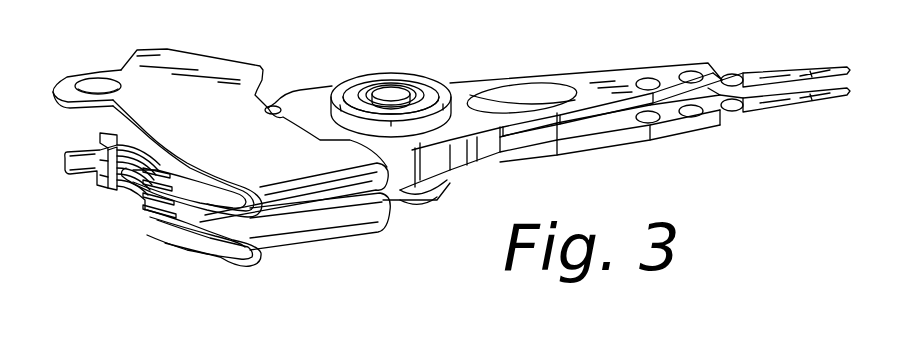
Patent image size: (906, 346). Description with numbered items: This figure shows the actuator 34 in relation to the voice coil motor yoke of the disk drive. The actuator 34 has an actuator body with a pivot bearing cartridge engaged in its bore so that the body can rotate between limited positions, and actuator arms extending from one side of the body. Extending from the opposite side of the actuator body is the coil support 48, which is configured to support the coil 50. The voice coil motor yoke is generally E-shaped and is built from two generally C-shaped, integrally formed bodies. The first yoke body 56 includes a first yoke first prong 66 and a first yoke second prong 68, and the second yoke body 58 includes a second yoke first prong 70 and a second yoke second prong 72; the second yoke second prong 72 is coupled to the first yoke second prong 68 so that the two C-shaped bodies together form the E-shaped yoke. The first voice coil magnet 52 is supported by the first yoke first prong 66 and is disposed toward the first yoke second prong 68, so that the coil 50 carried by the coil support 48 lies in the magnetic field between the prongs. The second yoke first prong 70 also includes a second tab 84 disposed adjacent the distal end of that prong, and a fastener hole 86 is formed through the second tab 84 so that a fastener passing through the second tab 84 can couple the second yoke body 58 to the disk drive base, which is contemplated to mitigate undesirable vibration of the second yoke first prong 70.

The actuator 34 is at (458, 86).
The coil support 48 is at (143, 218).
The coil 50 is at (103, 186).
The first voice coil magnet 52 is at (180, 220).
The first yoke body 56 is at (280, 241).
The second yoke body 58 is at (317, 190).
The first yoke first prong 66 is at (221, 254).
The first yoke second prong 68 is at (217, 217).
The second yoke first prong 70 is at (190, 163).
The second yoke second prong 72 is at (210, 207).
The second tab 84 is at (72, 78).
The fastener hole 86 is at (100, 76).